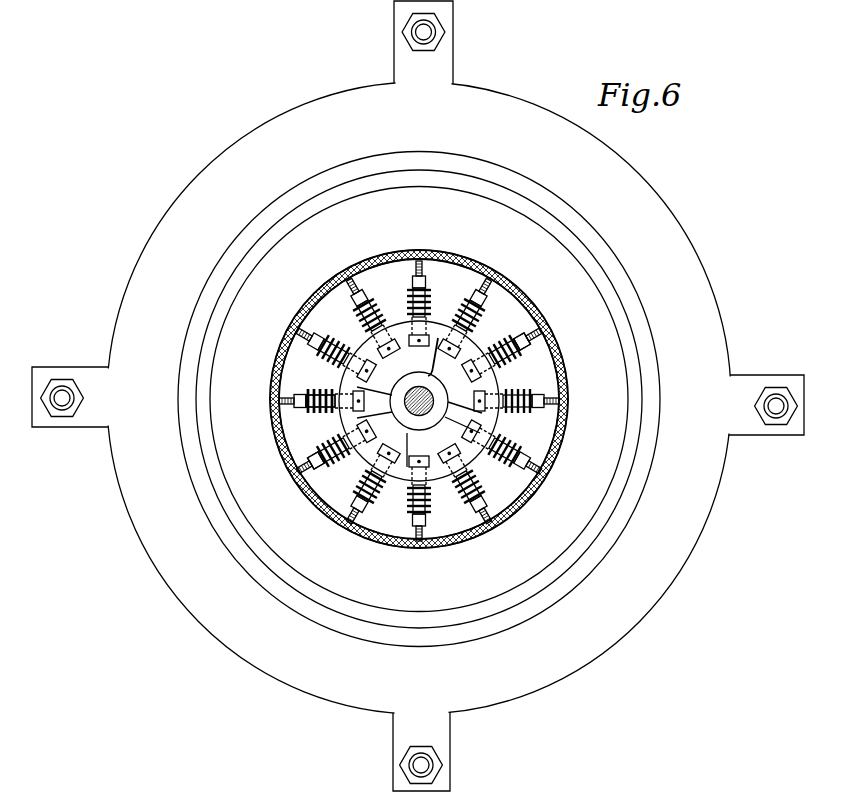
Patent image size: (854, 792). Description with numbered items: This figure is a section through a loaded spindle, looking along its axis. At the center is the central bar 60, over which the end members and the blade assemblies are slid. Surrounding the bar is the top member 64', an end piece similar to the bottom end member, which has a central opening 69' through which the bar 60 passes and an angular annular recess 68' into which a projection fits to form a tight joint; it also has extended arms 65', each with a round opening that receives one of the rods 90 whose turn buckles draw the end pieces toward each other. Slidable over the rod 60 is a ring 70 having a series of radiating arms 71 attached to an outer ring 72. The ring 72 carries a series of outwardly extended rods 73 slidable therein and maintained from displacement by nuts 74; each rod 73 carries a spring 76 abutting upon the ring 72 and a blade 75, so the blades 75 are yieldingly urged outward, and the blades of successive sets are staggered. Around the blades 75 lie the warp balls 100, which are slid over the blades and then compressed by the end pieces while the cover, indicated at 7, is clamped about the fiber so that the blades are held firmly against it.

The casing shell 7 is at (317, 317).
The central bar 60 is at (433, 402).
The top member 64' is at (407, 398).
The extended arms 65' is at (418, 396).
The angular annular recess 68' is at (411, 399).
The central opening 69' is at (419, 399).
The rings 70 is at (426, 428).
The radiating arms 71 is at (428, 357).
The ring 72 is at (428, 322).
The rods 73 is at (520, 337).
The nuts 74 is at (419, 401).
The blades 75 is at (312, 333).
The spring 76 is at (312, 395).
The rods 90 is at (411, 32).
The warp balls 100 is at (558, 366).